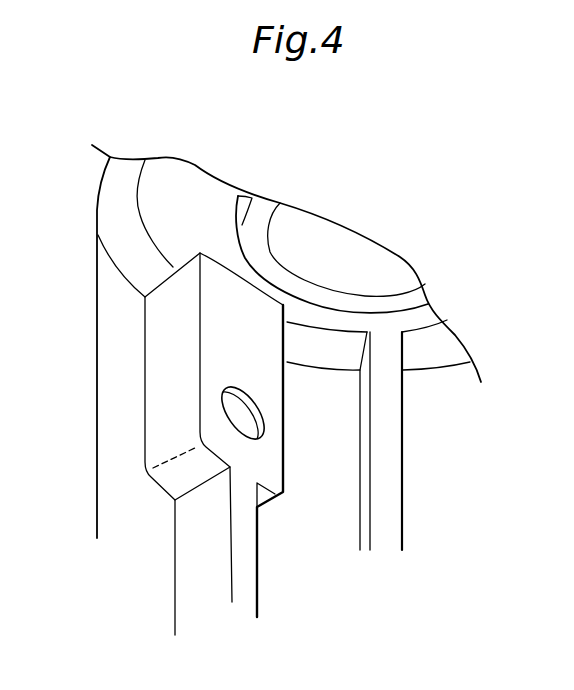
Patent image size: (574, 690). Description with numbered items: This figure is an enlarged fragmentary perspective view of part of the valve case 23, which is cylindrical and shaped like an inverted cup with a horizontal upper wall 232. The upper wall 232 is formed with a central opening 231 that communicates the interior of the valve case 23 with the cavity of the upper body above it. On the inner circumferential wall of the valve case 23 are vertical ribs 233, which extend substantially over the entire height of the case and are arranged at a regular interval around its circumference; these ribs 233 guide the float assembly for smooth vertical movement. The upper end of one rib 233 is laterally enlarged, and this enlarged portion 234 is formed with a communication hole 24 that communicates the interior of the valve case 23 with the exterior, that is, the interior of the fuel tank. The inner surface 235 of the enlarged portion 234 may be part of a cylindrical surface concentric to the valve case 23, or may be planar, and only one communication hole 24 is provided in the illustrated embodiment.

The valve case 23 is at (424, 216).
The central opening 231 is at (268, 233).
The upper wall 232 is at (182, 190).
The vertical ribs 233 is at (183, 578).
The enlarged portion 234 is at (157, 371).
The inner surface 235 is at (277, 453).
The communication hole 24 is at (243, 394).